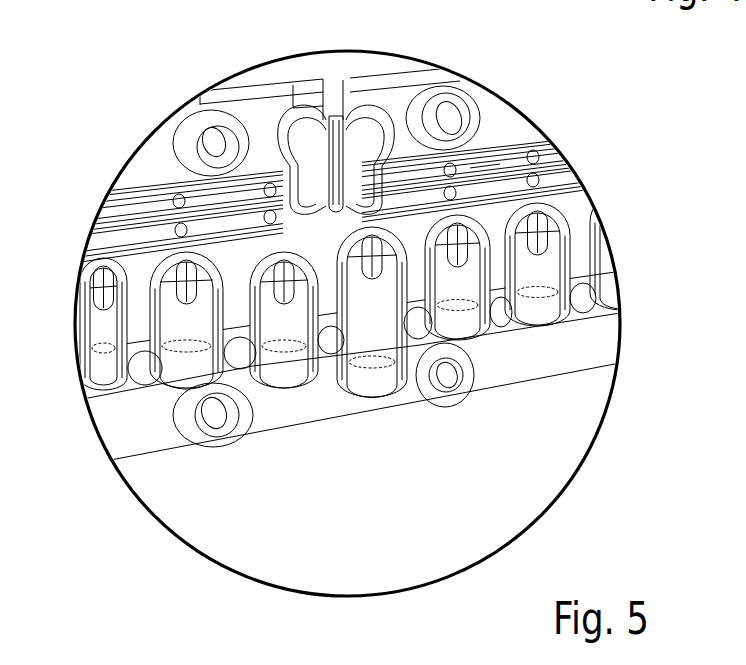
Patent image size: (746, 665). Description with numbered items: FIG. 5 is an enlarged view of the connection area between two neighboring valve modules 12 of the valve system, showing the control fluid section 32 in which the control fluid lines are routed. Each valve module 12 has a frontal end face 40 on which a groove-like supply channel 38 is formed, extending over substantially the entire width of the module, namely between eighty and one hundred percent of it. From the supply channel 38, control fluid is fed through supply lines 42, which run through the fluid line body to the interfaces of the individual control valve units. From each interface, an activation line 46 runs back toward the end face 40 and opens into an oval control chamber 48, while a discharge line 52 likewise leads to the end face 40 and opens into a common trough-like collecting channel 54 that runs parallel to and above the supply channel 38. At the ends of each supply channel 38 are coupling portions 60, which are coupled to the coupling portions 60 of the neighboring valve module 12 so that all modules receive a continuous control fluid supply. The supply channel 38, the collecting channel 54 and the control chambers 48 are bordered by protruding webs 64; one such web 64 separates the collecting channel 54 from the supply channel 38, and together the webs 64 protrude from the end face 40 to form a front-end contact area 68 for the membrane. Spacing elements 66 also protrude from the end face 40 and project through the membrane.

The valve module 12 is at (143, 423).
The control fluid section 32 is at (150, 0).
The supply channel 38 is at (111, 237).
The end face 40 is at (515, 372).
The supply line 42 is at (182, 229).
The activation line 46 is at (183, 288).
The control chamber 48 is at (200, 352).
The discharge line 52 is at (181, 200).
The collecting channel 54 is at (498, 167).
The coupling portion 60 is at (302, 130).
The web 64 is at (566, 195).
The spacing element 66 is at (220, 438).
The front-end contact area 68 is at (368, 399).